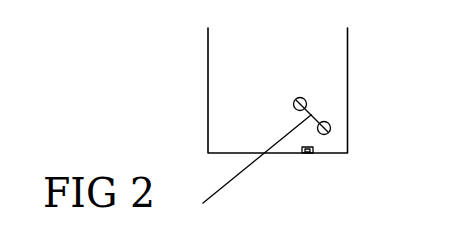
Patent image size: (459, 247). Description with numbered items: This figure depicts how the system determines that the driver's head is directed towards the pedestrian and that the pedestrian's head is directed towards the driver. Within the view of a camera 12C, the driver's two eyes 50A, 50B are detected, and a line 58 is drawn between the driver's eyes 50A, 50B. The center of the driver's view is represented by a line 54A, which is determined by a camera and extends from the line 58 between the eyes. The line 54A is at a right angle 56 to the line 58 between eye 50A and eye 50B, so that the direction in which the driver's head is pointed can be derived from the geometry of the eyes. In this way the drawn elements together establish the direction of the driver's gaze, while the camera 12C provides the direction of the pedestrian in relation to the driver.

The camera 12C is at (313, 150).
The driver's eye 50A is at (331, 129).
The driver's eye 50B is at (295, 101).
The center of driver's view 54A is at (232, 181).
The right angle 56 is at (309, 115).
The line between driver's eyes 58 is at (317, 121).